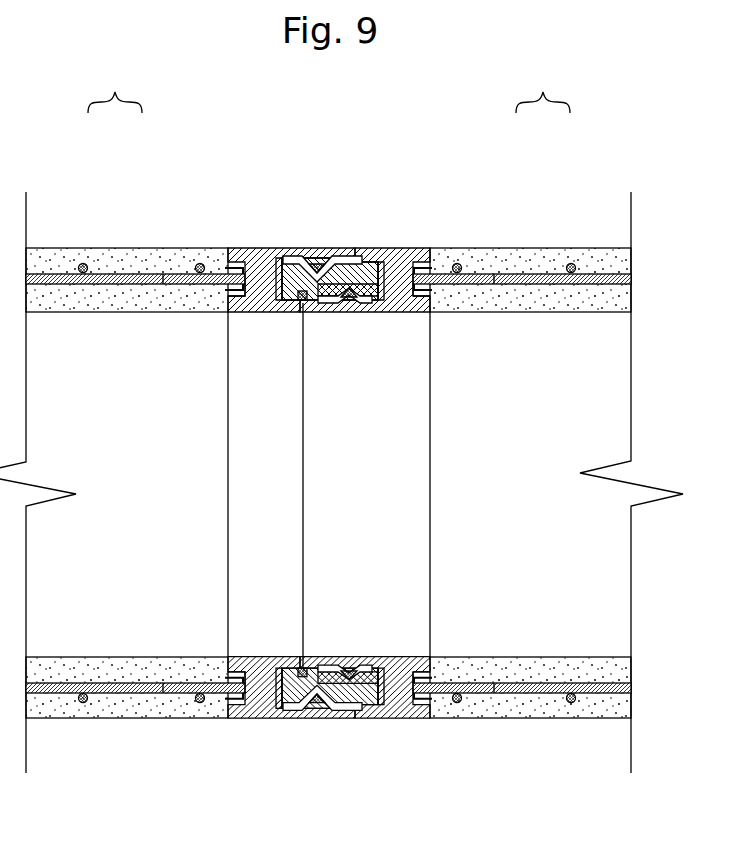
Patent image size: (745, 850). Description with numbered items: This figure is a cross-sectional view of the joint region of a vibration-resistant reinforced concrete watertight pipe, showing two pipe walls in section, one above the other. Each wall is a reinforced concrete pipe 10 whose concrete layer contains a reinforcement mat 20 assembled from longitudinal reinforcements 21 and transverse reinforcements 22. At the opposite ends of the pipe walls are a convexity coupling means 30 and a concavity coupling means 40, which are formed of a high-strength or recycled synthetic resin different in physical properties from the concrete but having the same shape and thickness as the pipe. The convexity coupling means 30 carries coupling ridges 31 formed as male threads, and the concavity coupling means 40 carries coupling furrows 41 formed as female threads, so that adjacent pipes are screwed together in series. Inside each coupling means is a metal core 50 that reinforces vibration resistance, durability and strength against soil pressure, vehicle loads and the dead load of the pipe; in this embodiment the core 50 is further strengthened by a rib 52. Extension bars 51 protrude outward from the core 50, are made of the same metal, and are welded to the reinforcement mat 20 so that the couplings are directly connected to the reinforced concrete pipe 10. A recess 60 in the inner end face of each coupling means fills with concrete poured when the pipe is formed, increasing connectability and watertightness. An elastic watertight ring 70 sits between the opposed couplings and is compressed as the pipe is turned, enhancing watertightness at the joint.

The reinforced concrete pipe 10 is at (115, 300).
The reinforcement mat 20 is at (329, 89).
The longitudinal reinforcements 21 is at (40, 277).
The transverse reinforcements 22 is at (200, 265).
The convexity coupling means 30 is at (390, 246).
The coupling ridges 31 is at (335, 303).
The concavity coupling means 40 is at (268, 246).
The coupling furrows 41 is at (330, 275).
The metal core 50 is at (292, 256).
The extension bars 51 is at (238, 290).
The rib 52 is at (318, 266).
The recess 60 is at (230, 268).
The watertight ring 70 is at (300, 305).